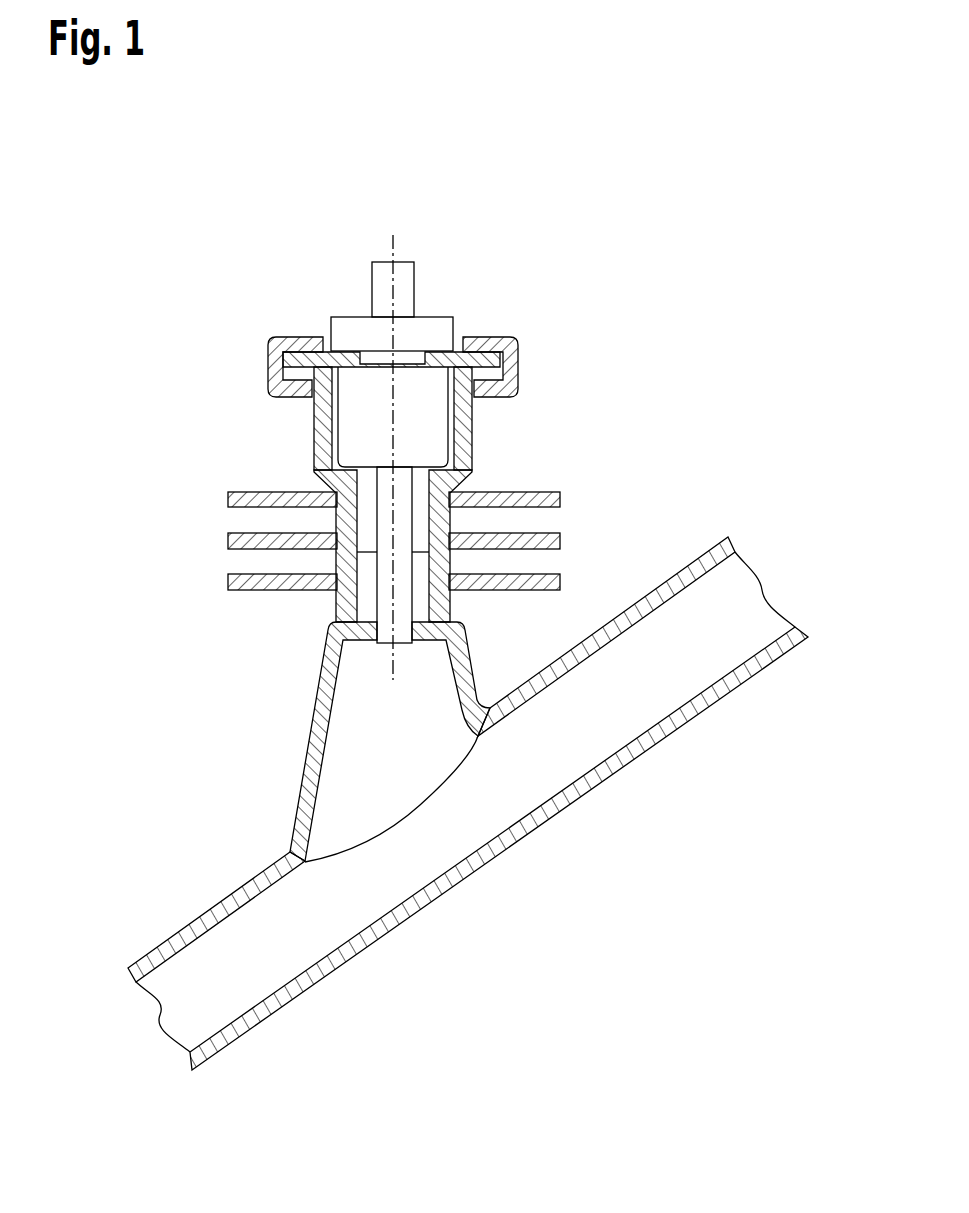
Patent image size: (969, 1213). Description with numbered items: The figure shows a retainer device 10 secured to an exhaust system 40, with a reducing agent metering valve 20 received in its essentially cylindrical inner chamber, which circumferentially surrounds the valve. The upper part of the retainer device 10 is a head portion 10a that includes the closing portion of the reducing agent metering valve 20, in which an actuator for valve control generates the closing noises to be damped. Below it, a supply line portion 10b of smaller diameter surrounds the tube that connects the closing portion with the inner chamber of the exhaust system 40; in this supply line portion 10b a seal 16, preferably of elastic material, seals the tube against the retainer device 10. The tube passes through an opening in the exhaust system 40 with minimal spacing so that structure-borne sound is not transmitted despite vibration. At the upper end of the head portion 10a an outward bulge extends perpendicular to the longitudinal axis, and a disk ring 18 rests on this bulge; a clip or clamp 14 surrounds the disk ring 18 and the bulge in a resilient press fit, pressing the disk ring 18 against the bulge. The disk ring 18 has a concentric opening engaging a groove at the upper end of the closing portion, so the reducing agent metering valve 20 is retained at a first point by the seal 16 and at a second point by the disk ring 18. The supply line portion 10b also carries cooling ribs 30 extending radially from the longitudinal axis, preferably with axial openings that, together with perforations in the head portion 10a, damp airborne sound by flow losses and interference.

The retainer device 10 is at (320, 473).
The head portion 10a is at (147, 330).
The supply line portion 10b is at (148, 486).
The clip or clamp 14 is at (267, 353).
The seal 16 is at (365, 605).
The disk ring 18 is at (468, 337).
The reducing agent metering valve 20 is at (432, 421).
The cooling ribs 30 is at (544, 533).
The exhaust system 40 is at (684, 718).